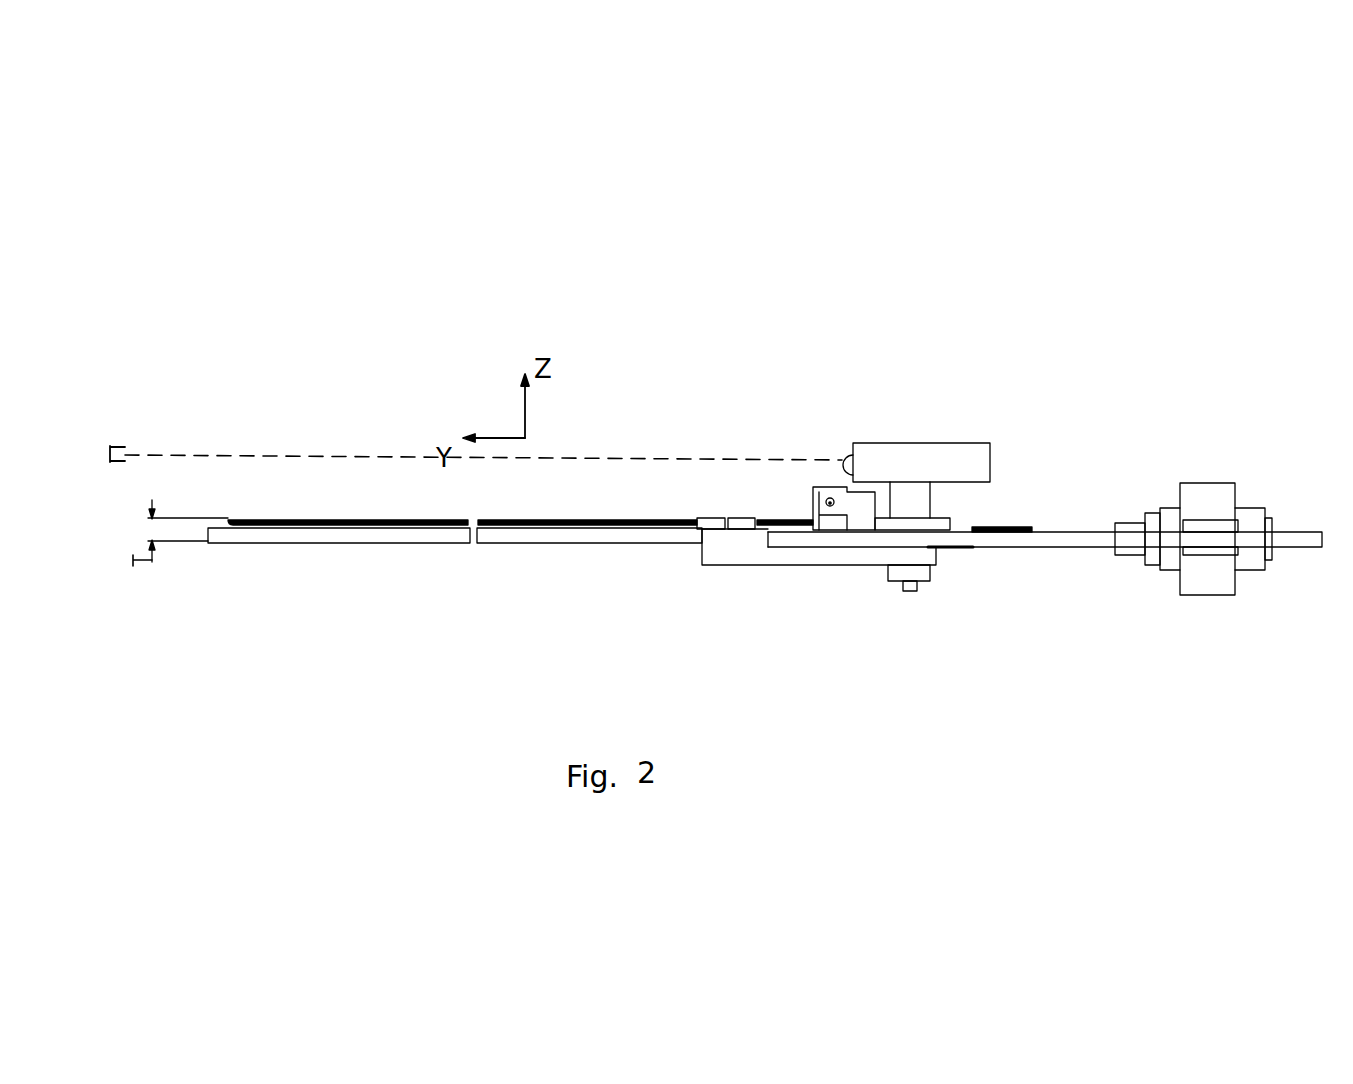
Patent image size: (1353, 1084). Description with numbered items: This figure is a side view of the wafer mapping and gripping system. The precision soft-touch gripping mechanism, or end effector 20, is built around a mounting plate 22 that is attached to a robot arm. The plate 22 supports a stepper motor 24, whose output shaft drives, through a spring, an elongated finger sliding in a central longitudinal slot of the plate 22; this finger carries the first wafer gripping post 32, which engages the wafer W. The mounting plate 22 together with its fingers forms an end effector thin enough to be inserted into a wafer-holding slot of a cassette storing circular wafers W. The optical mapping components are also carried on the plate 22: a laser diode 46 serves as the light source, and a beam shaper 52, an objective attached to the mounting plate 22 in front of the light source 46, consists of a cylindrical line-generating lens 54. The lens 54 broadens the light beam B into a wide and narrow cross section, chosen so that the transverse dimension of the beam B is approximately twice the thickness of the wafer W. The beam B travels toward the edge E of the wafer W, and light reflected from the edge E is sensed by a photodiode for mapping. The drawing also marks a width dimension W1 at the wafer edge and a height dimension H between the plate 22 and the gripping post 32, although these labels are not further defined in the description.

The end effector 20 is at (844, 437).
The mounting plate 22 is at (1297, 550).
The stepper motor 24 is at (1217, 482).
The first wafer gripping post 32 is at (230, 518).
The laser diode 46 is at (928, 443).
The beam shaper 52 is at (916, 383).
The cylindrical line-generating lens 54 is at (842, 452).
The wafer W is at (310, 520).
The wafer width W1 is at (184, 447).
The edge of the wafer E is at (210, 455).
The light beam B is at (362, 452).
The height H is at (180, 533).